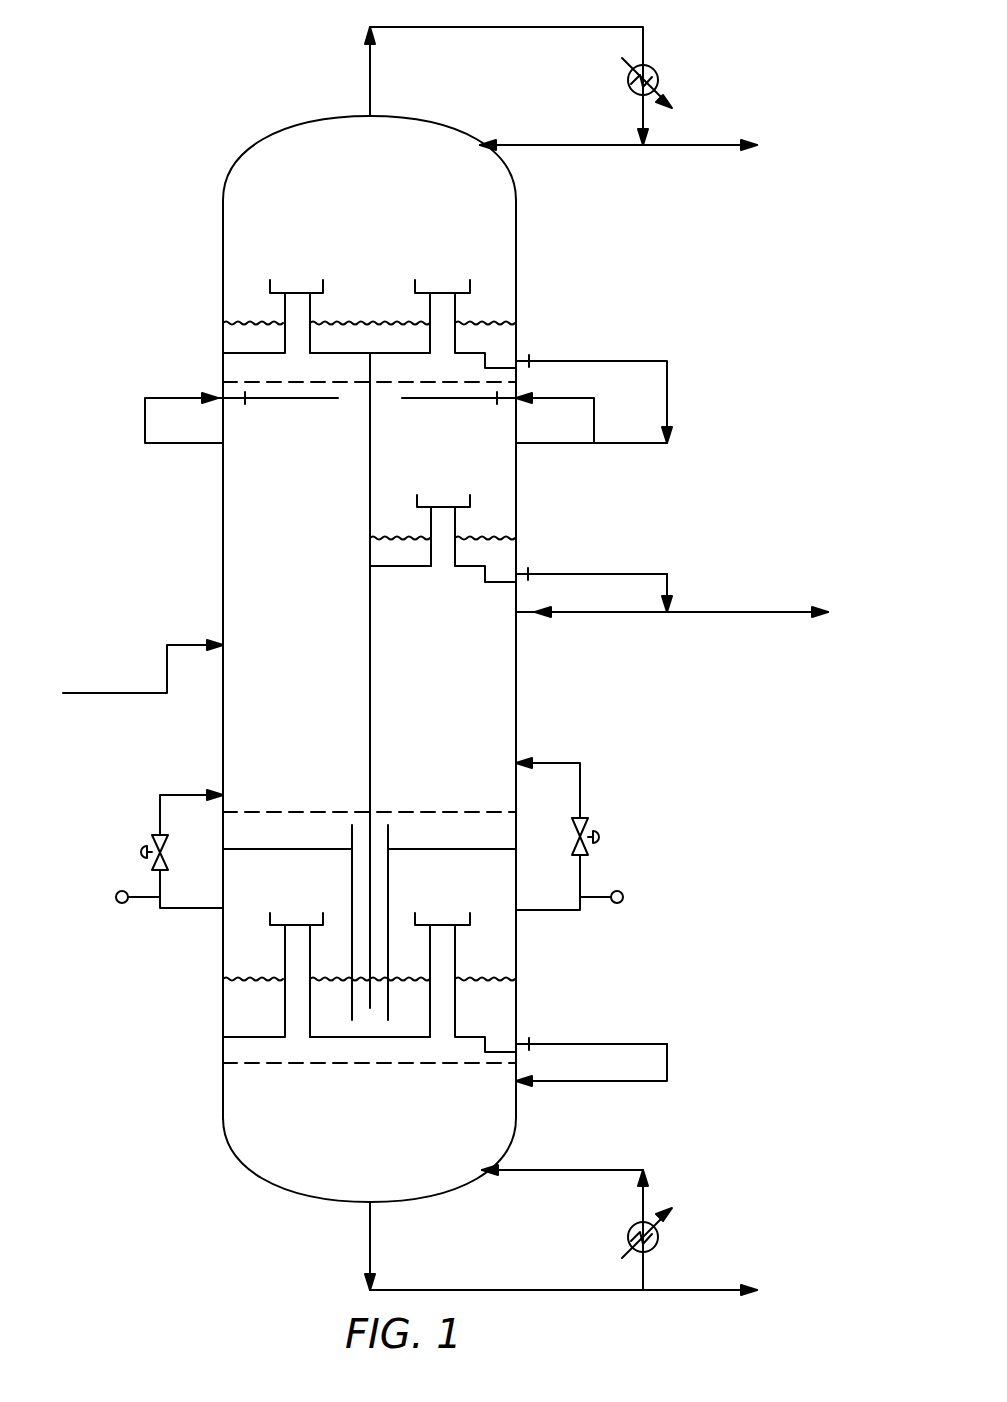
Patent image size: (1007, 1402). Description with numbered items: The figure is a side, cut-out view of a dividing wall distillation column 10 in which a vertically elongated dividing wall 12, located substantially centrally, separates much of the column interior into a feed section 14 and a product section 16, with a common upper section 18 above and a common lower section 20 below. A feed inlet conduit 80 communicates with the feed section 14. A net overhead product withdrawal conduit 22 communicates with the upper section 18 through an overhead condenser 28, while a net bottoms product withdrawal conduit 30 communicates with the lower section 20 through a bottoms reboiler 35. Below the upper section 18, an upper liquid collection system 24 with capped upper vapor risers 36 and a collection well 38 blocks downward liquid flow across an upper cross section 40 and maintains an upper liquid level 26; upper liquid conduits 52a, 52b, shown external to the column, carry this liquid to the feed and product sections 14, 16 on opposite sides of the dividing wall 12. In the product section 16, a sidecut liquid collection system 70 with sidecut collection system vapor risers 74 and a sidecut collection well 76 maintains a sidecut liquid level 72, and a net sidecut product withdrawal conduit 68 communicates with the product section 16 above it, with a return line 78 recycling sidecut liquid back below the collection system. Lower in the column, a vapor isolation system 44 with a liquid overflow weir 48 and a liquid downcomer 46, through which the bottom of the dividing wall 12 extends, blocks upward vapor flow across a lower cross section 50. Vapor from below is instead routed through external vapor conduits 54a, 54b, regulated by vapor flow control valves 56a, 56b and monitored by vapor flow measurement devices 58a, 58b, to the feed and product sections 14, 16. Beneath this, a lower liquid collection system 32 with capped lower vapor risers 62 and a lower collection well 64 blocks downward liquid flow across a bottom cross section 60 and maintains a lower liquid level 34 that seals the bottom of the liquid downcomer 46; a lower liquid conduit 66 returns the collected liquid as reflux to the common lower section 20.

The dividing wall distillation column 10 is at (88, 50).
The dividing wall 12 is at (372, 632).
The feed section 14 is at (285, 480).
The product section 16 is at (430, 480).
The upper section 18 is at (357, 154).
The lower section 20 is at (357, 1156).
The net overhead product withdrawal conduit 22 is at (712, 140).
The upper liquid collection system 24 is at (360, 350).
The upper liquid level 26 is at (249, 321).
The overhead condenser 28 is at (660, 80).
The net bottoms product withdrawal conduit 30 is at (703, 1290).
The lower liquid collection system 32 is at (330, 1034).
The lower liquid level 34 is at (250, 976).
The bottoms reboiler 35 is at (660, 1240).
The upper vapor risers 36 is at (458, 302).
The collection well 38 is at (500, 377).
The upper cross section 40 is at (298, 380).
The vapor isolation system 44 is at (434, 844).
The liquid downcomer 46 is at (390, 880).
The liquid overflow weir 48 is at (350, 832).
The lower cross section 50 is at (285, 810).
The upper liquid conduit 52a is at (162, 443).
The upper liquid conduit 52b is at (588, 396).
The vapor conduit 54a is at (164, 792).
The vapor conduit 54b is at (570, 768).
The vapor flow control valve 56a is at (137, 852).
The vapor flow control valve 56b is at (600, 838).
The vapor flow measurement device 58a is at (112, 897).
The vapor flow measurement device 58b is at (624, 897).
The bottom cross section 60 is at (367, 1068).
The lower vapor risers 62 is at (458, 950).
The lower collection well 64 is at (500, 1060).
The lower liquid conduit 66 is at (650, 1044).
The net sidecut product withdrawal conduit 68 is at (722, 612).
The sidecut liquid collection system 70 is at (374, 564).
The sidecut liquid level 72 is at (399, 532).
The sidecut collection system vapor risers 74 is at (459, 518).
The sidecut collection well 76 is at (500, 590).
The side draw return line 78 is at (645, 574).
The feed inlet conduit 80 is at (120, 690).